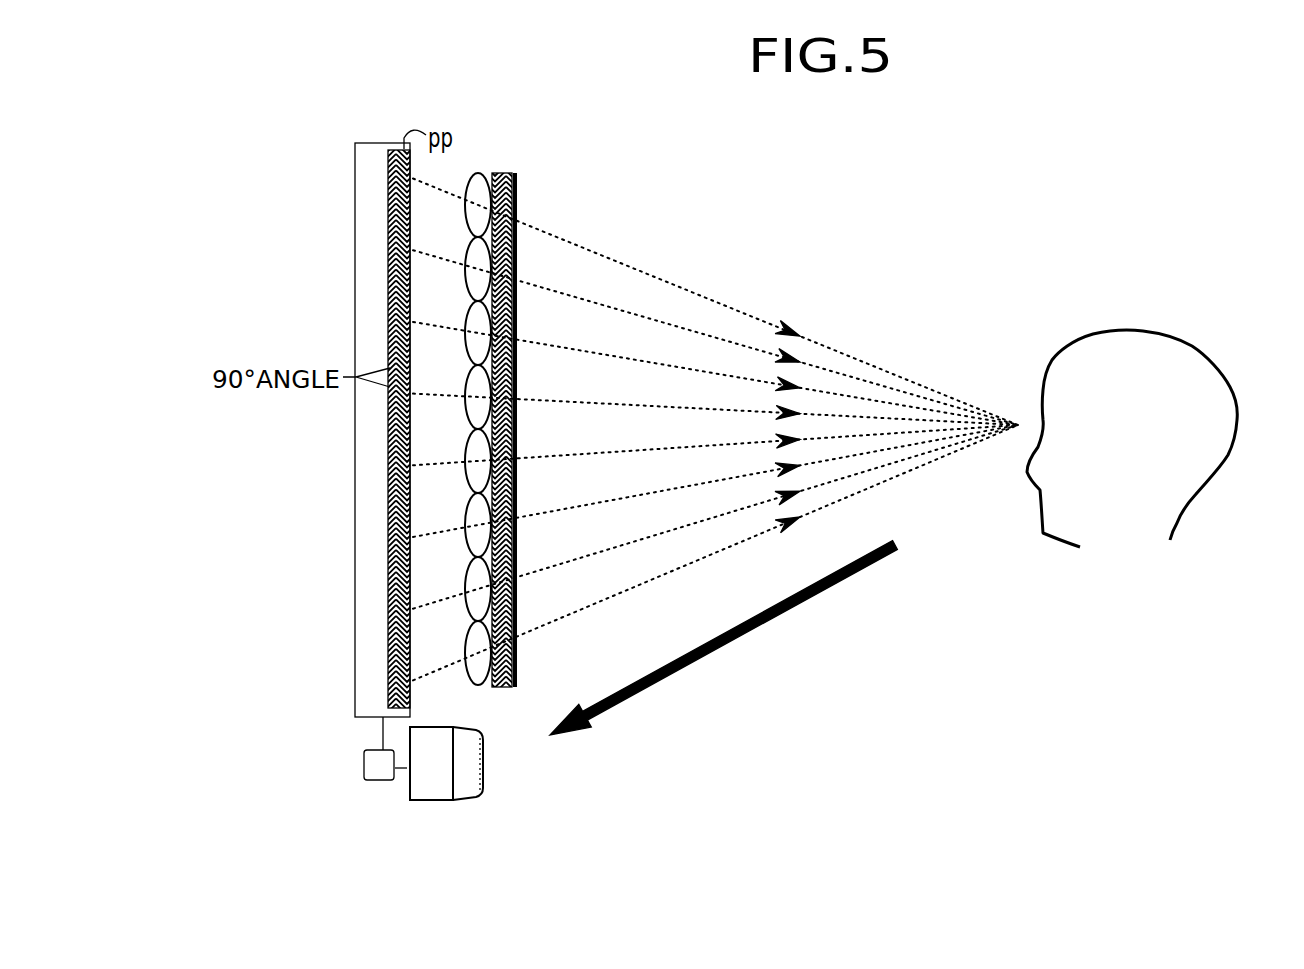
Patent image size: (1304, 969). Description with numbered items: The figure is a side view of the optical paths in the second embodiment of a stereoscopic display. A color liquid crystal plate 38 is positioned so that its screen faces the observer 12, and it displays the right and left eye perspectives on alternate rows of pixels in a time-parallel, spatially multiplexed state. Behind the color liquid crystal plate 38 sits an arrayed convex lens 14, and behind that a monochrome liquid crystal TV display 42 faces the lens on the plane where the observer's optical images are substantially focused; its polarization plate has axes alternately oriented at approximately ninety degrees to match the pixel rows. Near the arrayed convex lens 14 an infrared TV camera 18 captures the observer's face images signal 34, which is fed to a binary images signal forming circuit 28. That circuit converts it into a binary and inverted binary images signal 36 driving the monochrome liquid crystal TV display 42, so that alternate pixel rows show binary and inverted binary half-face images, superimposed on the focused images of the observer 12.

The observer 12 is at (1222, 532).
The arrayed convex lens 14 is at (488, 168).
The infrared TV camera 18 is at (482, 814).
The binary images signal forming circuit 28 is at (373, 795).
The observers' face images signal 34 is at (405, 782).
The binary and inverted binary images signal 36 is at (360, 726).
The color liquid crystal plate 38 is at (528, 175).
The monochrome liquid crystal TV display 42 is at (352, 257).